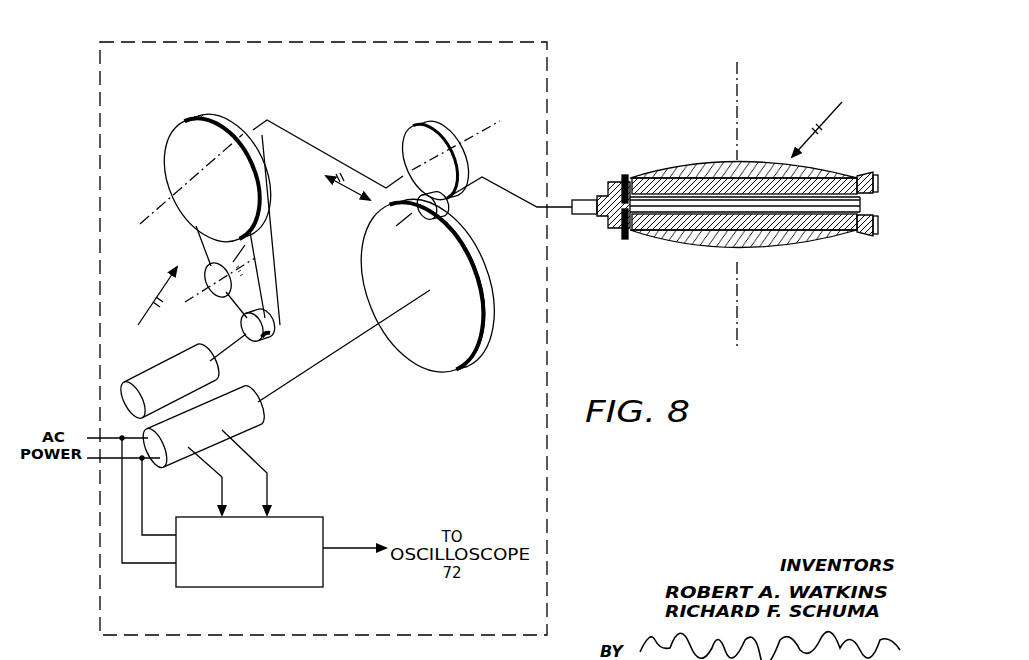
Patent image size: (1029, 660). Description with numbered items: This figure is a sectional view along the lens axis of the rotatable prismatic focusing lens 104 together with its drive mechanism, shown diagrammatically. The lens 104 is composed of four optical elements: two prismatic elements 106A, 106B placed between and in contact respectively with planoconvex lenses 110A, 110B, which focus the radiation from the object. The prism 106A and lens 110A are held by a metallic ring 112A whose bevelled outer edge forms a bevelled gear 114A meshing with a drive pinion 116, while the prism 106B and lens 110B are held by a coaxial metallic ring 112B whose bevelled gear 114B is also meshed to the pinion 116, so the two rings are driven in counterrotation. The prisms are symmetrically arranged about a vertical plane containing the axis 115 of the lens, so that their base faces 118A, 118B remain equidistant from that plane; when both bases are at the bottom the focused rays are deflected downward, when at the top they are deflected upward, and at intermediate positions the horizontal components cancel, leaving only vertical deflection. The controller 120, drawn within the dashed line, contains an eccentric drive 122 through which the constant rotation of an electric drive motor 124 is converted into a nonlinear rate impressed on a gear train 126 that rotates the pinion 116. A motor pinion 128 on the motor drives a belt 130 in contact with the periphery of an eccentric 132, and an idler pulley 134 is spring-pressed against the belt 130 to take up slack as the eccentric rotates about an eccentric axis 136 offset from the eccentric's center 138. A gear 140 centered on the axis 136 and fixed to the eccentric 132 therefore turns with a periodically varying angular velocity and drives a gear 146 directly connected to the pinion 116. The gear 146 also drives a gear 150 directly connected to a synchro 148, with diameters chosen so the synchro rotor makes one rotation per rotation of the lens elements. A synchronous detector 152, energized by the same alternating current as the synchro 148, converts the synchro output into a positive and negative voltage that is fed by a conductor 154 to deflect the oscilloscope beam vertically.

The lens 104 is at (721, 148).
The prismatic element 106A is at (676, 182).
The prismatic element 106B is at (692, 229).
The planoconvex lens 110A is at (741, 170).
The planoconvex lens 110B is at (757, 241).
The metallic ring 112A is at (830, 172).
The metallic ring 112B is at (839, 238).
The bevelled gear 114A is at (878, 186).
The bevelled gear 114B is at (878, 236).
The axis 115 is at (738, 84).
The drive pinion 116 is at (606, 196).
The base face 118A is at (627, 177).
The base face 118B is at (625, 240).
The controller 120 is at (547, 48).
The eccentric drive 122 is at (140, 306).
The electric drive motor 124 is at (216, 368).
The gear train 126 is at (327, 176).
The motor pinion 128 is at (243, 328).
The belt 130 is at (280, 252).
The eccentric 132 is at (168, 150).
The idler pulley 134 is at (209, 267).
The eccentric axis 136 is at (254, 131).
The center 138 is at (158, 218).
The gear 140 is at (404, 140).
The gear 146 is at (448, 210).
The synchro 148 is at (256, 428).
The gear 150 is at (431, 362).
The synchronous detector 152 is at (302, 516).
The conductor 154 is at (346, 546).